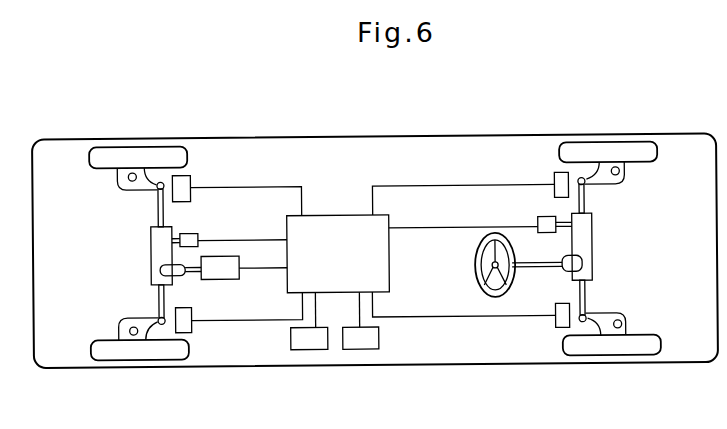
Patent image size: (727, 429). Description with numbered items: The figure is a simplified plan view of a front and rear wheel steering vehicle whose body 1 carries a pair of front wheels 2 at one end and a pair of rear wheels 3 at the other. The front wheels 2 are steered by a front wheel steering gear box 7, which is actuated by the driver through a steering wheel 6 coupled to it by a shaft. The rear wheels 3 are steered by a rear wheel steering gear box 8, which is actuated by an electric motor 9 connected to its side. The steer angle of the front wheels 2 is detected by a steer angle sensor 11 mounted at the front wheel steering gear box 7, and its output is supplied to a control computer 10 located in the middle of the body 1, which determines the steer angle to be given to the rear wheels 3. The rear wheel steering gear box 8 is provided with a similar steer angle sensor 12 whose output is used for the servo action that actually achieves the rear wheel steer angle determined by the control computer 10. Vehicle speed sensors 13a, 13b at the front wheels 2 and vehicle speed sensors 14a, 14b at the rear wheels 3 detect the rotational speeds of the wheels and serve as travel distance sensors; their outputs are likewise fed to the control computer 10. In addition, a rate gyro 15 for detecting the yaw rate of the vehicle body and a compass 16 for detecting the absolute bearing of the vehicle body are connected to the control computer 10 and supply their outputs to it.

The vehicle body 1 is at (419, 146).
The front wheels 2 is at (593, 150).
The rear wheels 3 is at (133, 151).
The steering wheel 6 is at (474, 264).
The front wheel steering gear box 7 is at (594, 242).
The rear wheel steering gear box 8 is at (152, 249).
The actuator drive motor 9 is at (220, 279).
The control computer 10 is at (332, 218).
The steer angle sensor 11 is at (540, 220).
The steer angle sensor 12 is at (188, 232).
The vehicle speed sensor 13a is at (556, 178).
The vehicle speed sensor 13b is at (554, 322).
The vehicle speed sensor 14a is at (187, 175).
The vehicle speed sensor 14b is at (192, 328).
The rate gyro 15 is at (360, 344).
The compass 16 is at (302, 346).